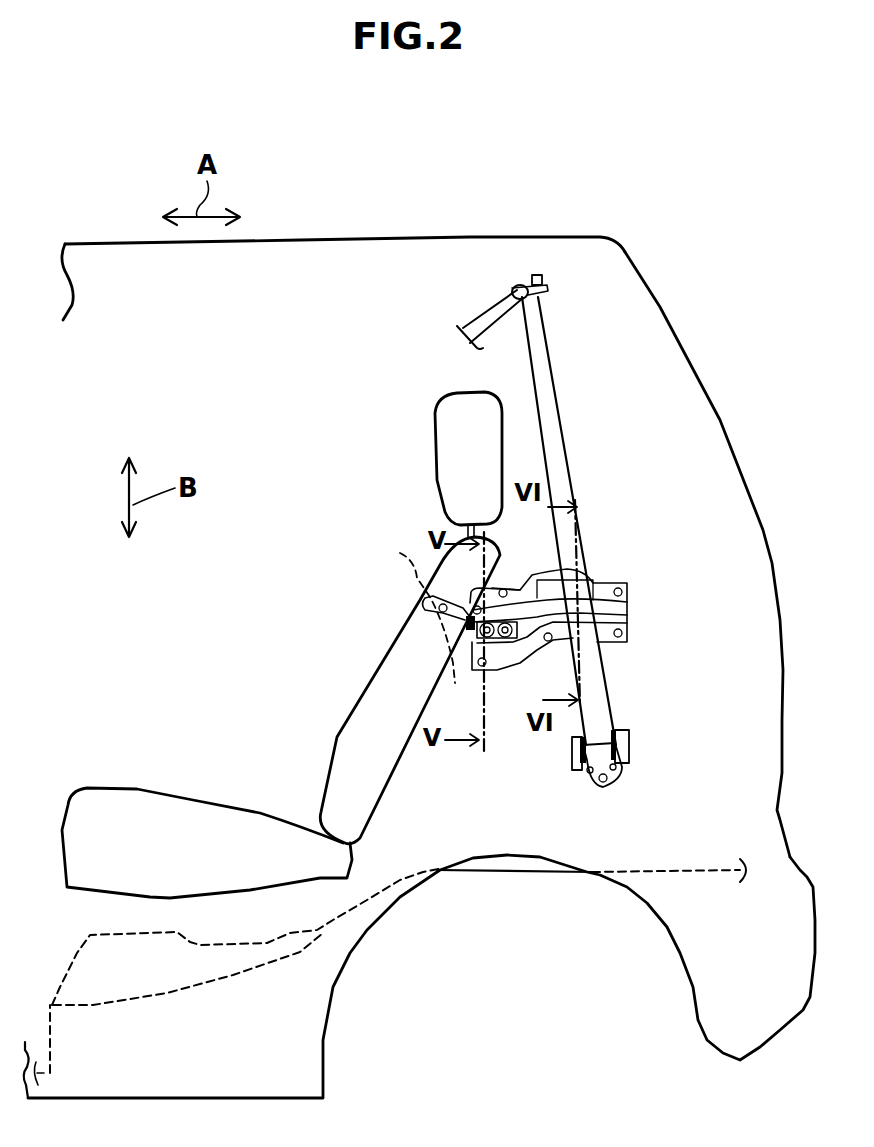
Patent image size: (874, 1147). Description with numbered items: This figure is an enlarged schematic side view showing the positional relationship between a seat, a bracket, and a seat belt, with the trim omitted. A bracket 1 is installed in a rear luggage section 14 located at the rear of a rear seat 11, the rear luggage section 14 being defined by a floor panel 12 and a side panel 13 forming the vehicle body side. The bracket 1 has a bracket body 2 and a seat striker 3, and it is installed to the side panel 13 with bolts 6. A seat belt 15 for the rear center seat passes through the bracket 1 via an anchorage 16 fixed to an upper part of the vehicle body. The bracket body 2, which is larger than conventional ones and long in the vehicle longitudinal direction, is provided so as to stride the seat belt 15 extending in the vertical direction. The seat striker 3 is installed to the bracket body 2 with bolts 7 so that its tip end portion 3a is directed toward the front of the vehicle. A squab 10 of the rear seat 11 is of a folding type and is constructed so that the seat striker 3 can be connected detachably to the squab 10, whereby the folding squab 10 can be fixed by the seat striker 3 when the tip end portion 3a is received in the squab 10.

The bracket 1 is at (623, 583).
The bracket body 2 is at (630, 635).
The seat striker 3 is at (449, 649).
The tip end portion 3a is at (406, 608).
The bolts 6 is at (548, 642).
The bolts 7 is at (513, 587).
The squab 10 is at (397, 635).
The rear seat 11 is at (244, 745).
The floor panel 12 is at (657, 870).
The side panel 13 is at (716, 420).
The rear luggage section 14 is at (709, 728).
The seat belt 15 is at (480, 320).
The anchorage 16 is at (538, 275).